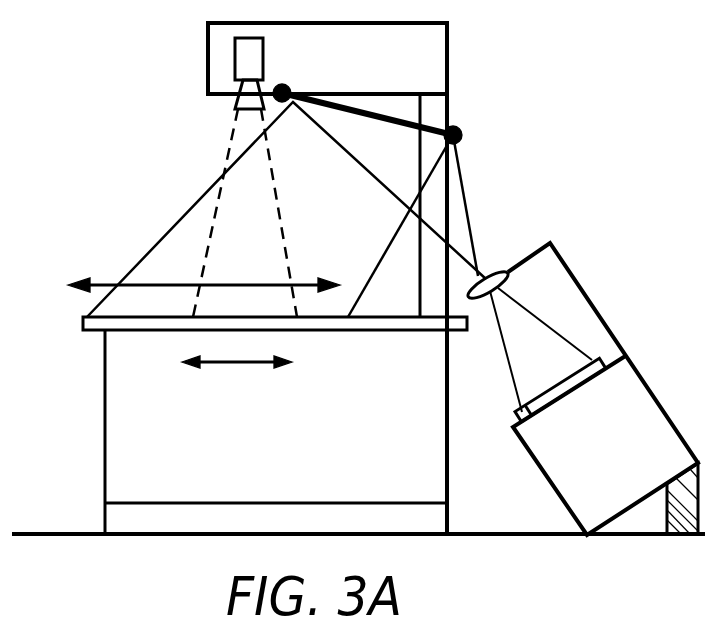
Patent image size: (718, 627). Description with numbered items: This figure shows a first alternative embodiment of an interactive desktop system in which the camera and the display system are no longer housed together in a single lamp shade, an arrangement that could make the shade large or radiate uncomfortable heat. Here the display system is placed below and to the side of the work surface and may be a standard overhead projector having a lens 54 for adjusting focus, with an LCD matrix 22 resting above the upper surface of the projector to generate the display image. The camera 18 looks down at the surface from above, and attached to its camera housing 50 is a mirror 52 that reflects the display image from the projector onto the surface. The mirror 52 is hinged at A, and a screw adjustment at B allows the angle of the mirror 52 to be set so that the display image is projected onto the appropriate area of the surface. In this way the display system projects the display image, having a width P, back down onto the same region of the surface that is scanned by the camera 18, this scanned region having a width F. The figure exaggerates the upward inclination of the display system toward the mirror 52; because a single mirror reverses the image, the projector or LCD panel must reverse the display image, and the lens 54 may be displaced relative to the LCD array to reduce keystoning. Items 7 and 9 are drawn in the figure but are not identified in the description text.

The LCD matrix 22 is at (235, 68).
The camera housing 50 is at (400, 118).
The hinge A is at (284, 83).
The screw adjustment B is at (462, 137).
The camera 18 is at (117, 316).
The mirror 52 is at (105, 458).
The width of display image P is at (204, 274).
The width of scanned region F is at (237, 375).
The lens 54 is at (479, 298).
The image sensor 7 is at (593, 353).
The camera housing 9 is at (660, 398).